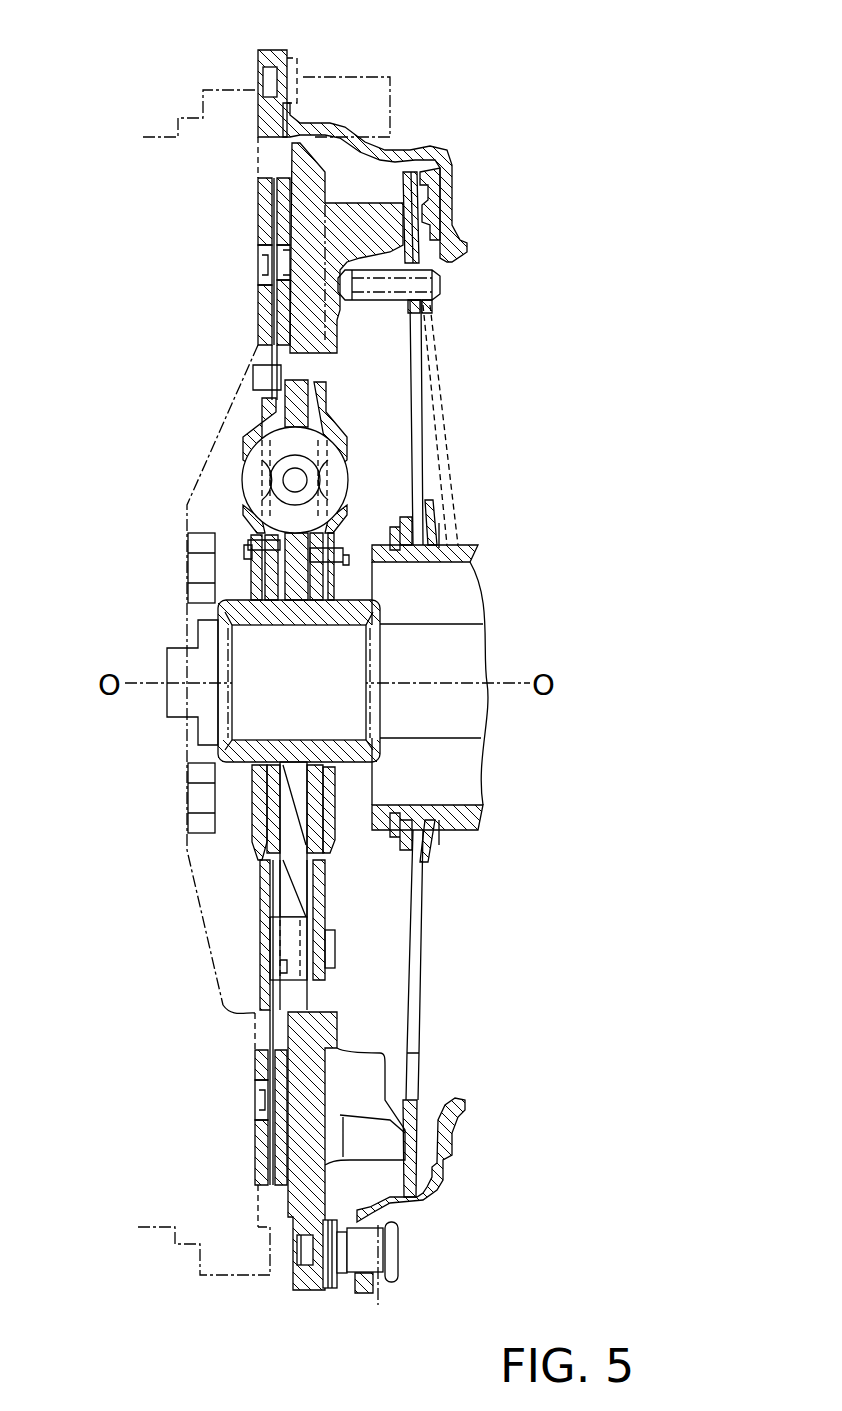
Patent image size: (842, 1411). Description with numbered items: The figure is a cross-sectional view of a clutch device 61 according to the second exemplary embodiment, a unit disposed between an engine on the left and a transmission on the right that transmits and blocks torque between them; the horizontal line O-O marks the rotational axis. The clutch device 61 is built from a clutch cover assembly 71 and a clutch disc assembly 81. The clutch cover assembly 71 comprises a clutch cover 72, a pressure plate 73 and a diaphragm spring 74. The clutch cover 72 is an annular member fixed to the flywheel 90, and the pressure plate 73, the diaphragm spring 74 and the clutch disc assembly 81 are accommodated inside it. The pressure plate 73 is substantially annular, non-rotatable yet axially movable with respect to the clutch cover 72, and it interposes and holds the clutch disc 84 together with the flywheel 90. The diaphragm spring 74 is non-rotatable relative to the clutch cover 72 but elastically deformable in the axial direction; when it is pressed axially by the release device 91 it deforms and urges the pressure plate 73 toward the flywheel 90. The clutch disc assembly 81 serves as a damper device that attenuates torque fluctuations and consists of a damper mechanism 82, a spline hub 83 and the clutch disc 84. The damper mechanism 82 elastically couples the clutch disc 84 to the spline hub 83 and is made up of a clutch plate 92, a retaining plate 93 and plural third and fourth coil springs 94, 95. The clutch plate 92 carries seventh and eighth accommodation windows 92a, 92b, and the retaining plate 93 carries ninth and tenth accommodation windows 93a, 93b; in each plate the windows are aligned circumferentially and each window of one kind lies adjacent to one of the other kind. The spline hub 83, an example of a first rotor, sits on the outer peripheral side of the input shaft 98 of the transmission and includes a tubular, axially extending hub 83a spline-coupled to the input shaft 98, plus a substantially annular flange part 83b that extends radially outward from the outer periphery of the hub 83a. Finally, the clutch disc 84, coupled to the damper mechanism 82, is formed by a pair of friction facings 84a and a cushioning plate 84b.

The clutch device 61 is at (357, 612).
The clutch cover assembly 71 is at (419, 124).
The clutch cover 72 is at (447, 218).
The pressure plate 73 is at (313, 188).
The diaphragm spring 74 is at (427, 377).
The clutch disc assembly 81 is at (312, 886).
The damper mechanism 82 is at (335, 467).
The spline hub 83 is at (225, 665).
The hub 83a is at (232, 750).
The flange part 83b is at (297, 860).
The clutch disc 84 is at (190, 289).
The friction facings 84a is at (258, 207).
The cushioning plate 84b is at (270, 333).
The flywheel 90 is at (240, 118).
The release device 91 is at (489, 547).
The clutch plate 92 is at (270, 872).
The seventh accommodation windows 92a is at (172, 482).
The eighth accommodation windows 92b is at (239, 413).
The retaining plate 93 is at (327, 883).
The ninth accommodation windows 93a is at (458, 491).
The tenth accommodation windows 93b is at (356, 417).
The third coil springs 94 is at (214, 469).
The fourth coil springs 95 is at (228, 473).
The input shaft 98 is at (178, 663).